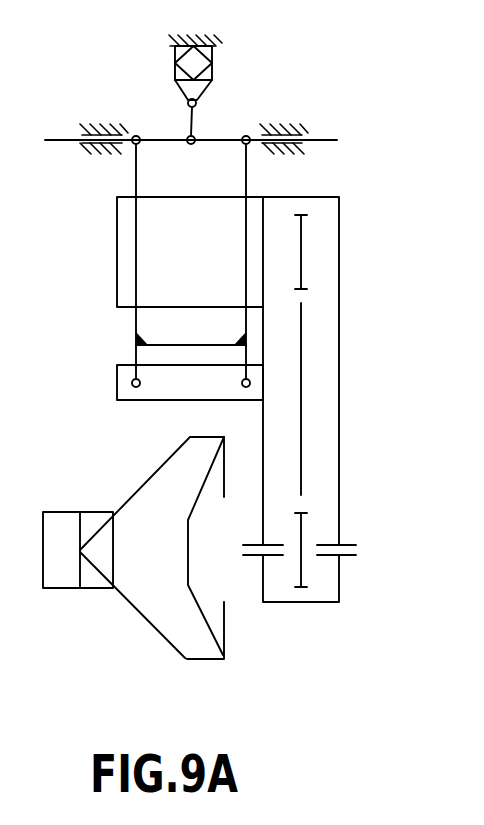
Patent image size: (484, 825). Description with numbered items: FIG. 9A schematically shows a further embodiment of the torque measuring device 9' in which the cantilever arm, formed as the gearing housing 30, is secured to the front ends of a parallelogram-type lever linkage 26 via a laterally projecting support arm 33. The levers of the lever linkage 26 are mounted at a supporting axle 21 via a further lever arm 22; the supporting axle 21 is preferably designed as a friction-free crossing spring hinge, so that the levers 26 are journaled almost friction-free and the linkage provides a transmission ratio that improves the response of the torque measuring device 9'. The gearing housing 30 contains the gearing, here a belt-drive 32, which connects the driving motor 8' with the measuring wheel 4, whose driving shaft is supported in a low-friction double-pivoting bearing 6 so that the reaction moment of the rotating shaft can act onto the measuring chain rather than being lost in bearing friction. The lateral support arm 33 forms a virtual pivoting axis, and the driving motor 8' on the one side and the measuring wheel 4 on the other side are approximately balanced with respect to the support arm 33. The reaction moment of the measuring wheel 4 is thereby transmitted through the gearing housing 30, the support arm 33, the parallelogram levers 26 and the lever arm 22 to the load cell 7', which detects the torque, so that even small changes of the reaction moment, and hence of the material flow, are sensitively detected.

The measuring wheel 4 is at (143, 480).
The double-pivoting bearing 6 is at (341, 545).
The load cell 7' is at (219, 71).
The driving motor 8' is at (159, 252).
The torque measuring device 9' is at (191, 105).
The supporting axle 21 is at (132, 137).
The lever arm 22 is at (187, 132).
The parallelogram-type lever linkage 26 is at (245, 275).
The gearing housing 30 is at (340, 397).
The belt-drive 32 is at (302, 458).
The lateral support arm 33 is at (118, 368).